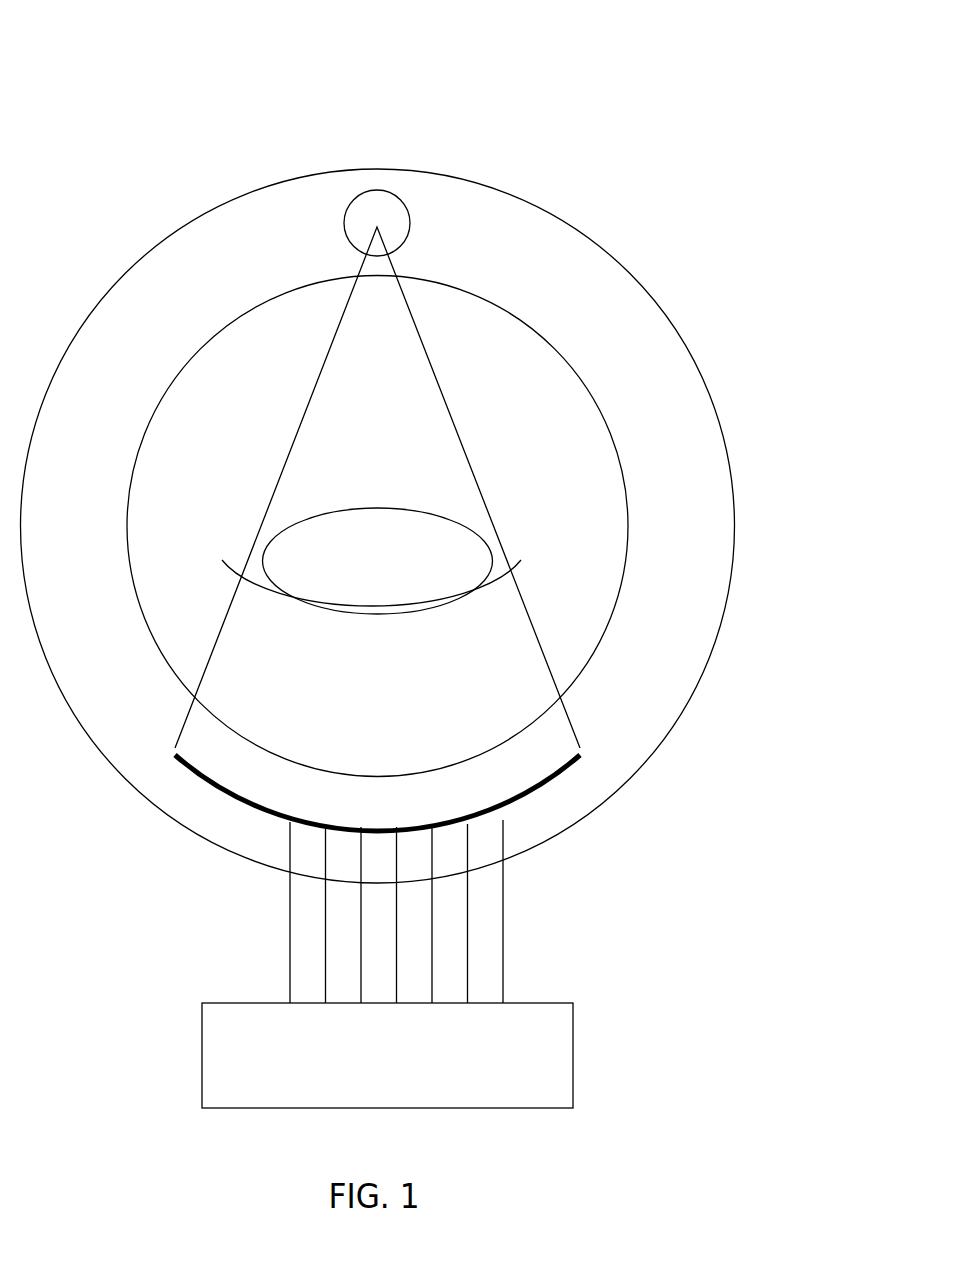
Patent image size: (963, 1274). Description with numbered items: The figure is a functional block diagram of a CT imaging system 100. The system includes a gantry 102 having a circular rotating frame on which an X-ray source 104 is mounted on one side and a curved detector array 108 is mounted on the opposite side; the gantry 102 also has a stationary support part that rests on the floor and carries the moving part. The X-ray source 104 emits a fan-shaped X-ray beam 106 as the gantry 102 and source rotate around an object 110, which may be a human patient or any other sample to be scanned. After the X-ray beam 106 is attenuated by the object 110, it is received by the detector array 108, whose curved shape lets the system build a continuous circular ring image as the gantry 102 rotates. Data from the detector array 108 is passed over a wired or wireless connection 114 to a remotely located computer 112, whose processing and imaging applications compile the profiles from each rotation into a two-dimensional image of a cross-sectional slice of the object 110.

The CT imaging system 100 is at (84, 96).
The gantry 102 is at (126, 275).
The X-ray source 104 is at (369, 191).
The X-ray beam 106 is at (444, 396).
The detector array 108 is at (549, 802).
The object 110 is at (467, 526).
The computer 112 is at (573, 1055).
The connection 114 is at (503, 952).